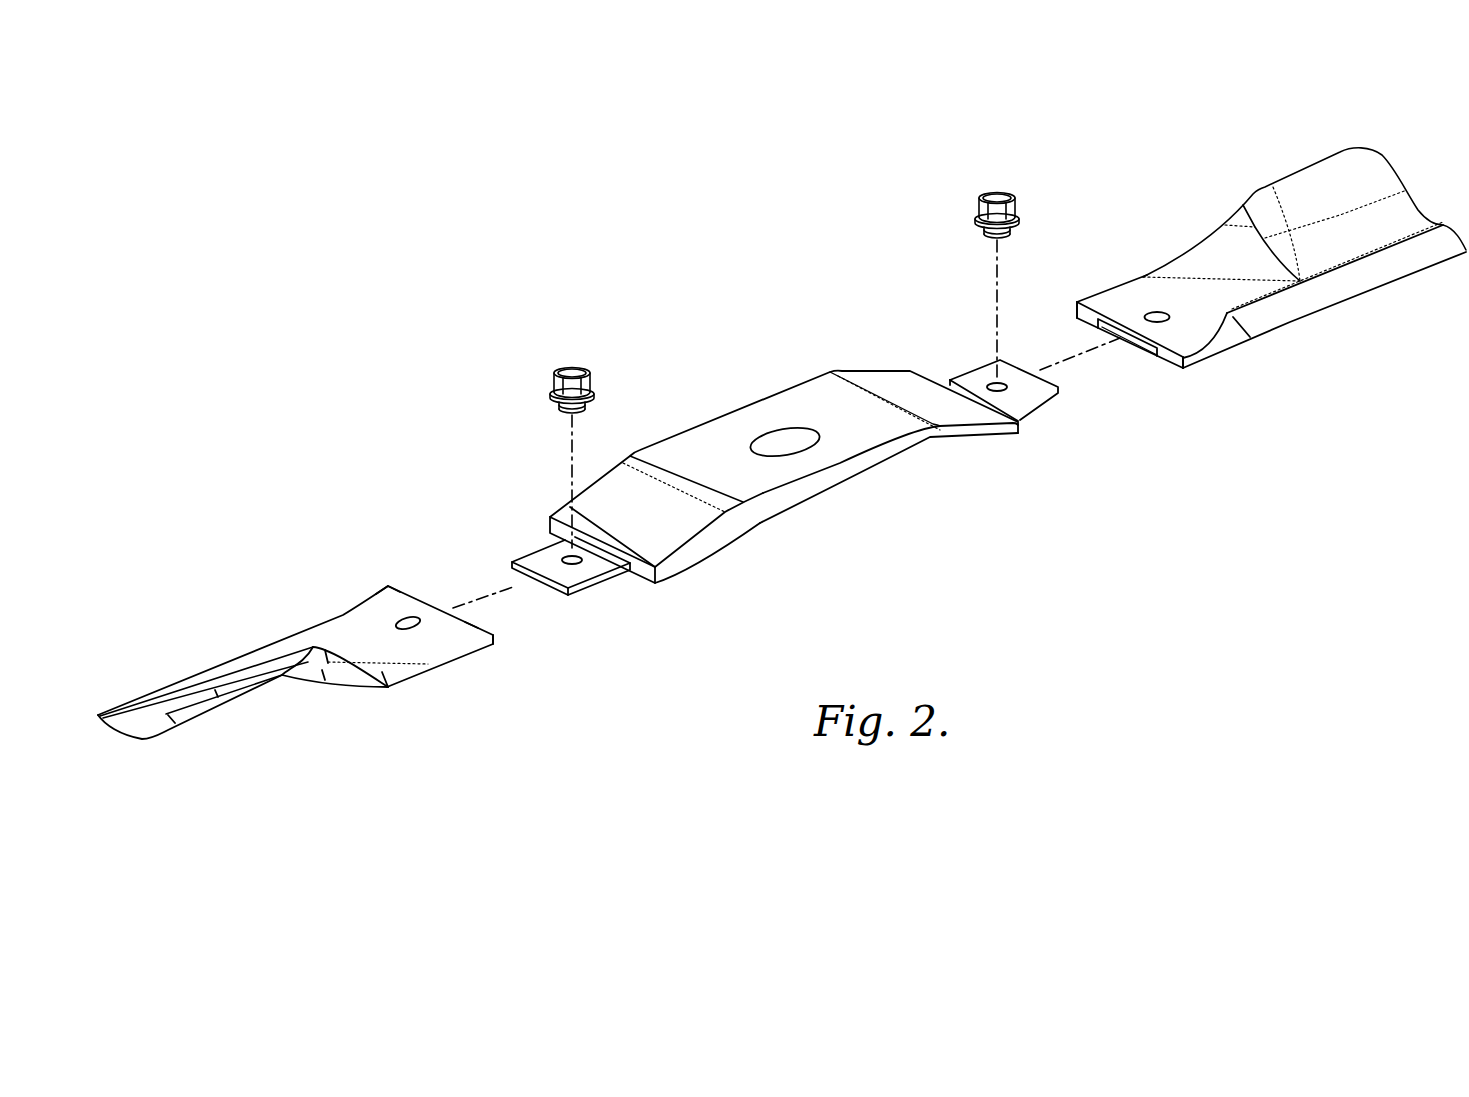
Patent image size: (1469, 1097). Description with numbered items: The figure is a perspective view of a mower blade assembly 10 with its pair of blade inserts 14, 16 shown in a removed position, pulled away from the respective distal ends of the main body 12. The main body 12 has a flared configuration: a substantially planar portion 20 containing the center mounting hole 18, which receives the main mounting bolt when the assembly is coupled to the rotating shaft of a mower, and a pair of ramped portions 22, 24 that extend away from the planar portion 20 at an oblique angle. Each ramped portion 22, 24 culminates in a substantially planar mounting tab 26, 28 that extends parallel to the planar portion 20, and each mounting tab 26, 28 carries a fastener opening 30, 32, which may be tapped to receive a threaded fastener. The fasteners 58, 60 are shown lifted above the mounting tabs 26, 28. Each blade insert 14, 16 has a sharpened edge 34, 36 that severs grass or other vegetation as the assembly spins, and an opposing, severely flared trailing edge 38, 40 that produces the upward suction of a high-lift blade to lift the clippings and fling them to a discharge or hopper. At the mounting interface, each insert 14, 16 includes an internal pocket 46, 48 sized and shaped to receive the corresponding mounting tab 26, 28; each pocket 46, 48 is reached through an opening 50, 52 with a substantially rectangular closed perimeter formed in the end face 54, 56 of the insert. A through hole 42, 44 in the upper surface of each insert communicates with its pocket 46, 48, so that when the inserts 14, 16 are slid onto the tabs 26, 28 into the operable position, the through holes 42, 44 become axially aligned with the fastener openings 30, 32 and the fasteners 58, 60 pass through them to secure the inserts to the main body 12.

The mower blade assembly 10 is at (553, 228).
The main body 12 is at (812, 392).
The blade insert 14 is at (1143, 282).
The blade insert 16 is at (360, 628).
The mounting hole 18 is at (815, 440).
The planar portion 20 is at (700, 440).
The ramped portion 22 is at (888, 385).
The ramped portion 24 is at (697, 522).
The mounting tab 26 is at (1020, 395).
The mounting tab 28 is at (597, 567).
The fastener opening 30 is at (995, 384).
The fastener opening 32 is at (570, 557).
The sharpened edge 34 is at (1370, 282).
The sharpened edge 36 is at (195, 680).
The trailing edge 38 is at (1333, 172).
The trailing edge 40 is at (247, 690).
The through hole 42 is at (1170, 313).
The through hole 44 is at (413, 632).
The internal pocket 46 is at (1080, 337).
The internal pocket 48 is at (421, 573).
The opening 50 is at (1147, 353).
The opening 52 is at (477, 623).
The end face 54 is at (1173, 364).
The end face 56 is at (527, 640).
The fastener 58 is at (997, 200).
The fastener 60 is at (573, 375).